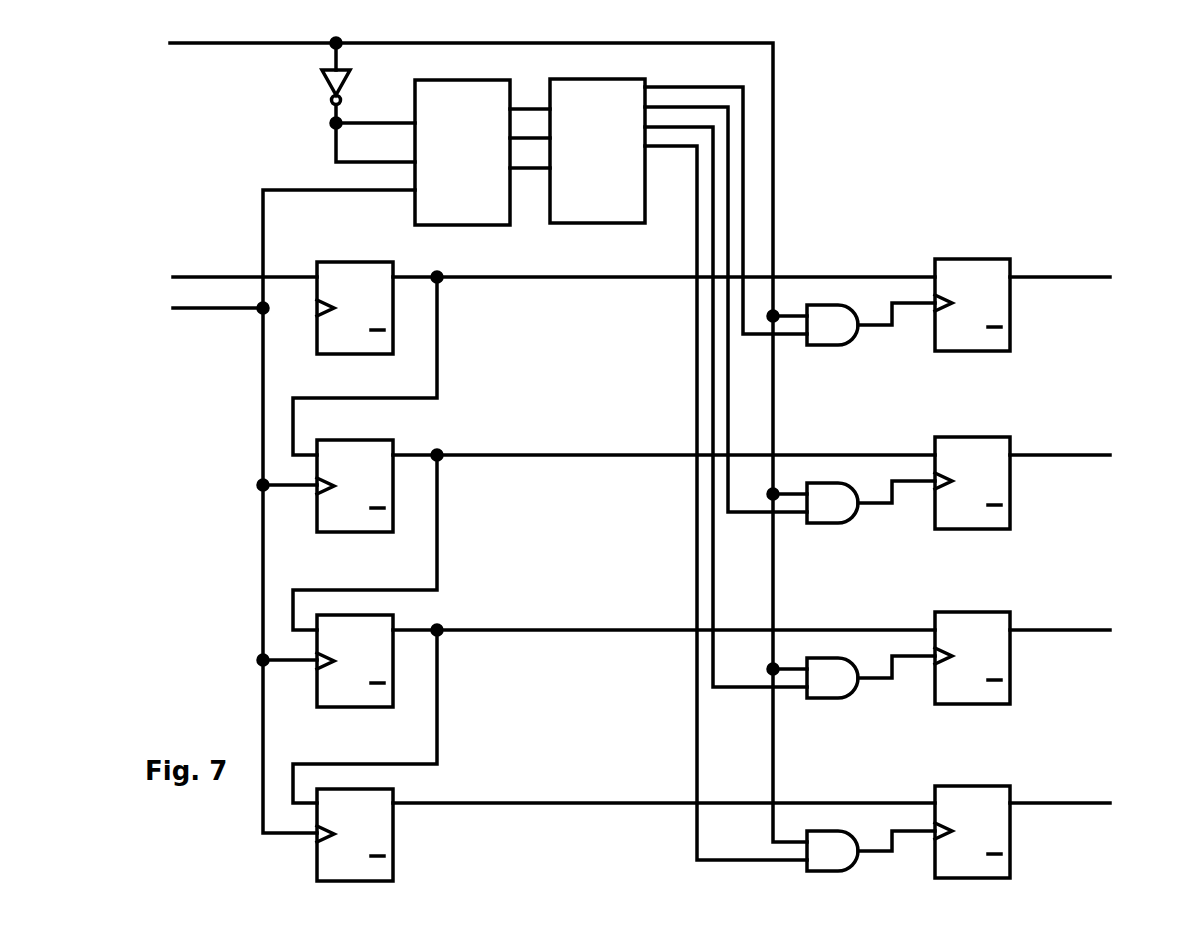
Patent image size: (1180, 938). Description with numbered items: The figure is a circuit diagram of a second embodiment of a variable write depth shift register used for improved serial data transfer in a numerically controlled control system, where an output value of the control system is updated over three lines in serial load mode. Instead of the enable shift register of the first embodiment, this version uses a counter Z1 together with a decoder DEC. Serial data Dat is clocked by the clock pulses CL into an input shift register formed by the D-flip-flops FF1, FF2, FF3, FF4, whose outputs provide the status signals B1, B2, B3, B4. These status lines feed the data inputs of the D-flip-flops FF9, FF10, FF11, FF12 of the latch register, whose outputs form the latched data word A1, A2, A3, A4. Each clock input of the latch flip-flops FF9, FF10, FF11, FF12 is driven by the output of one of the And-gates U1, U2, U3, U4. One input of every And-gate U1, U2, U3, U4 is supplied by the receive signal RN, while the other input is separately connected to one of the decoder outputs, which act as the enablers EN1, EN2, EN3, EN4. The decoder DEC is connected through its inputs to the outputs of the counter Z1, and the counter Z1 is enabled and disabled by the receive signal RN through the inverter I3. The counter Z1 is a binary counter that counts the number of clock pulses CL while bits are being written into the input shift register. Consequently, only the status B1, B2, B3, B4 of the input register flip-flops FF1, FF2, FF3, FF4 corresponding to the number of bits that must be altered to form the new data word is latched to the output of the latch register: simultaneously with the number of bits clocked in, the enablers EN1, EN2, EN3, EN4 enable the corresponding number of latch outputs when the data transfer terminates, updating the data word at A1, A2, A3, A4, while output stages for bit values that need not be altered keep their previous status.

The receive signal RN is at (472, 437).
The inverter I3 is at (368, 102).
The counter Z1 is at (482, 139).
The decoder DEC is at (597, 138).
The serial data input Dat is at (227, 277).
The clock pulses CL is at (276, 511).
The D-flip-flop FF1 is at (336, 308).
The D-flip-flop FF2 is at (336, 486).
The D-flip-flop FF3 is at (336, 661).
The D-flip-flop FF4 is at (336, 835).
The status of D-flip-flop FF1 B1 is at (614, 354).
The status of D-flip-flop FF2 B2 is at (614, 531).
The status of D-flip-flop FF3 B3 is at (614, 705).
The status of D-flip-flop FF4 B4 is at (664, 791).
The enabler EN1 is at (726, 211).
The enabler EN2 is at (726, 310).
The enabler EN3 is at (726, 407).
The enabler EN4 is at (726, 503).
The And-gate U1 is at (871, 315).
The And-gate U2 is at (871, 493).
The And-gate U3 is at (871, 668).
The And-gate U4 is at (871, 841).
The D-flip-flop FF9 is at (955, 305).
The D-flip-flop FF10 is at (953, 483).
The D-flip-flop FF11 is at (953, 658).
The D-flip-flop FF12 is at (953, 832).
The latch register output A1 is at (1093, 276).
The latch register output A2 is at (1093, 454).
The latch register output A3 is at (1093, 629).
The latch register output A4 is at (1093, 802).